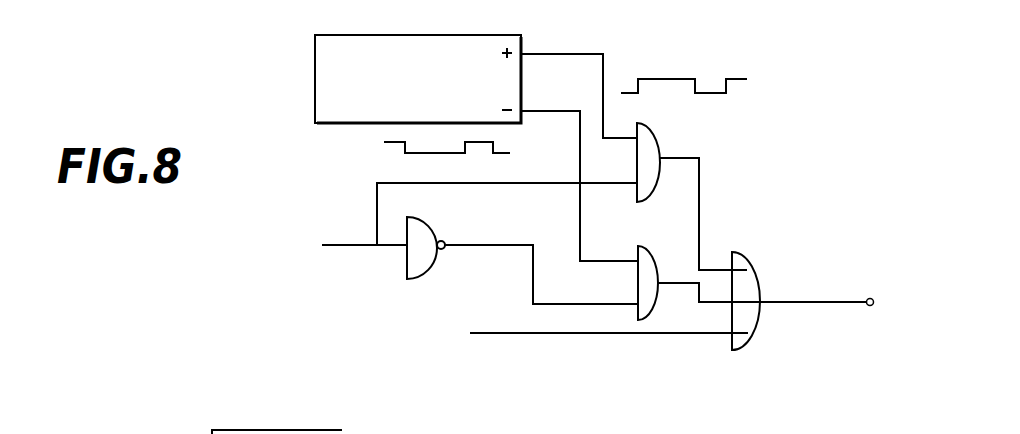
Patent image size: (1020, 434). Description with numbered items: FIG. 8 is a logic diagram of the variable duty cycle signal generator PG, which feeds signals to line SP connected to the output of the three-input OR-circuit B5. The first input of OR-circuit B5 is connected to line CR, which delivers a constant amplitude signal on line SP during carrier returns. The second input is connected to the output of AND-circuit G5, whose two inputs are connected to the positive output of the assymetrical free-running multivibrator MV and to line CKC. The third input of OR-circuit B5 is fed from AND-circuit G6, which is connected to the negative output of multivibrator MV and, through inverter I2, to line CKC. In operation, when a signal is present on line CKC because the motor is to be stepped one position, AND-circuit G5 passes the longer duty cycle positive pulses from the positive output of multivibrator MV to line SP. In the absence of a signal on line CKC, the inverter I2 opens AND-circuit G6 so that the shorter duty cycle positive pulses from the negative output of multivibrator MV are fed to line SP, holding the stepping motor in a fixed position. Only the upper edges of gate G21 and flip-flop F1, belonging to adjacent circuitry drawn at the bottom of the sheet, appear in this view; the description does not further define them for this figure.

The assymetrical free-running multivibrator MV is at (385, 10).
The line CKC is at (338, 245).
The inverter I2 is at (425, 271).
The AND-circuit G5 is at (655, 133).
The AND-circuit G6 is at (650, 245).
The line CR is at (470, 333).
The OR-circuit B5 is at (750, 262).
The line SP is at (850, 275).
The variable duty cycle signal generator PG is at (871, 410).
The gate G21 is at (347, 407).
The flip-flop F1 is at (620, 420).